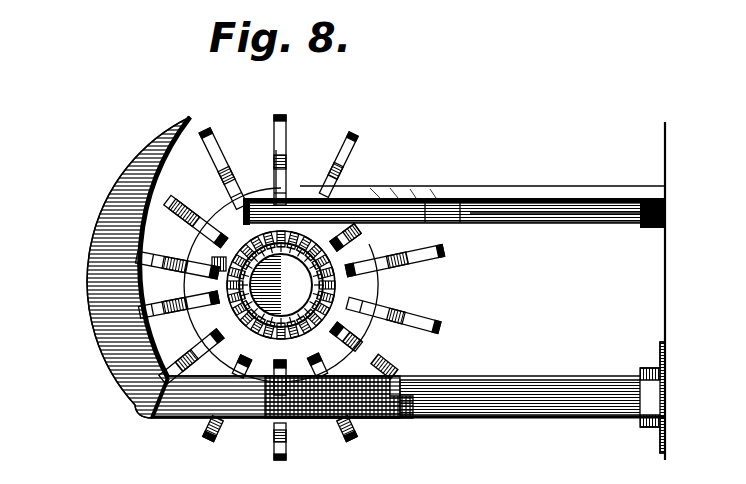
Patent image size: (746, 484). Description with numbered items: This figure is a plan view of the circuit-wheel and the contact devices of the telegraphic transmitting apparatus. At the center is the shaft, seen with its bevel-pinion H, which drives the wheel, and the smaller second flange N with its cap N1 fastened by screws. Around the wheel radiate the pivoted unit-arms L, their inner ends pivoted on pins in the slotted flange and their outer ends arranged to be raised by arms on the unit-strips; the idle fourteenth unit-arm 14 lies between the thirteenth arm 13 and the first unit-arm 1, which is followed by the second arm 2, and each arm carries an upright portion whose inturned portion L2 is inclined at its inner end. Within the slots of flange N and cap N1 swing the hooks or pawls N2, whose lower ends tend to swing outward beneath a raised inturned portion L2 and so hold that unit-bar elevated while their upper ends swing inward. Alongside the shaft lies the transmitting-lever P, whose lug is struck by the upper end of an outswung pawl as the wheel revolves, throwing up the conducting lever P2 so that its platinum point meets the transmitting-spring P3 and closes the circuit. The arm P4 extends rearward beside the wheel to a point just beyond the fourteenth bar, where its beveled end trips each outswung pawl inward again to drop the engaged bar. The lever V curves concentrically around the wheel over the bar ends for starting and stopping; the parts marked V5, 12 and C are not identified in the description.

The casing wall V5 is at (96, 268).
The lever V is at (408, 397).
The transmitting-lever P is at (408, 224).
The lever P2 is at (448, 224).
The transmitting-spring P3 is at (562, 224).
The arm P4 is at (518, 192).
The strip 12 is at (415, 195).
The hub / gear ring C is at (281, 285).
The unit-arm L is at (450, 327).
The fourteenth unit-arm 14 is at (265, 166).
The inclined pin 13 is at (349, 142).
The first unit-arm 1 is at (223, 169).
The pin 2 is at (196, 219).
The inturned portion L2 is at (390, 303).
The swinging hook or pawl N2 is at (268, 317).
The second flange N is at (282, 333).
The cap N1 is at (387, 297).
The bevel-pinion H is at (216, 265).